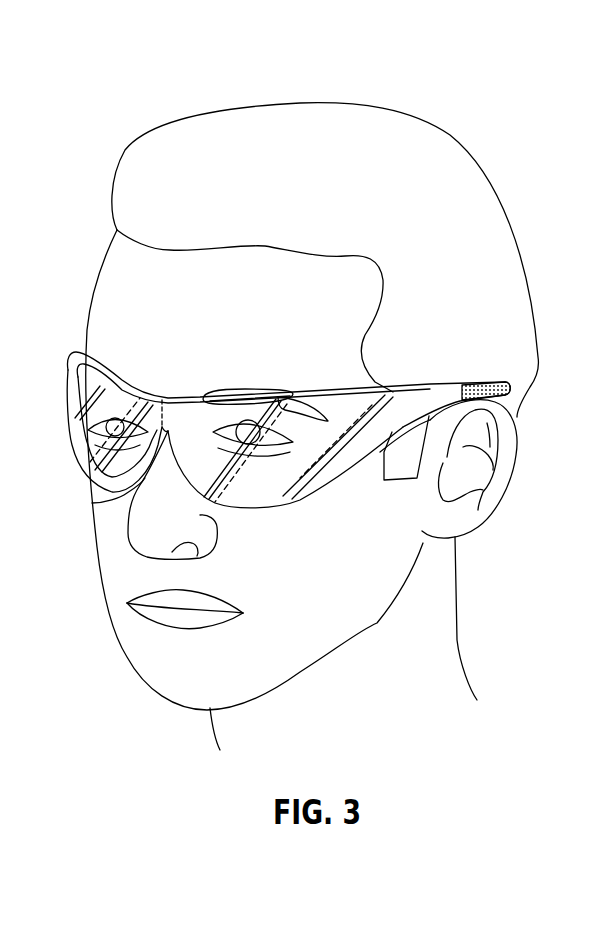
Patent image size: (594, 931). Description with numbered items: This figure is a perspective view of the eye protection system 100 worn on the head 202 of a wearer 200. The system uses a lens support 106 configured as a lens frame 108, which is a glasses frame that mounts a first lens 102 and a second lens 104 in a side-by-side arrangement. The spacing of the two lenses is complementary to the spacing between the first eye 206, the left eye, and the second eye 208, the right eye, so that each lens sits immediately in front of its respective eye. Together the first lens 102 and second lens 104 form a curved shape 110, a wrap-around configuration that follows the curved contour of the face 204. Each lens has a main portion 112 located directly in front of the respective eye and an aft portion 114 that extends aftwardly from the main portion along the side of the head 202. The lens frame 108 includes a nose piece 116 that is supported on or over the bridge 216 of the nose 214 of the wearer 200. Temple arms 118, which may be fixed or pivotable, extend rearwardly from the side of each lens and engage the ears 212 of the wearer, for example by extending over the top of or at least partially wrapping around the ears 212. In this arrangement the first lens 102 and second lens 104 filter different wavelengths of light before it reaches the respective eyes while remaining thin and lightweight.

The eye protection system 100 is at (68, 352).
The first lens 102 is at (300, 490).
The second lens 104 is at (83, 446).
The lens support 106 is at (333, 388).
The lens frame 108 is at (212, 395).
The curved shape 110 is at (245, 400).
The main portion 112 is at (250, 508).
The aft portion 114 is at (360, 465).
The nose piece 116 is at (173, 427).
The temple arms 118 is at (440, 385).
The wearer 200 is at (120, 122).
The head 202 is at (310, 105).
The face 204 is at (97, 565).
The first eye 206 is at (298, 395).
The second eye 208 is at (115, 415).
The ears 212 is at (518, 450).
The nose 214 is at (130, 533).
The bridge 216 is at (92, 503).